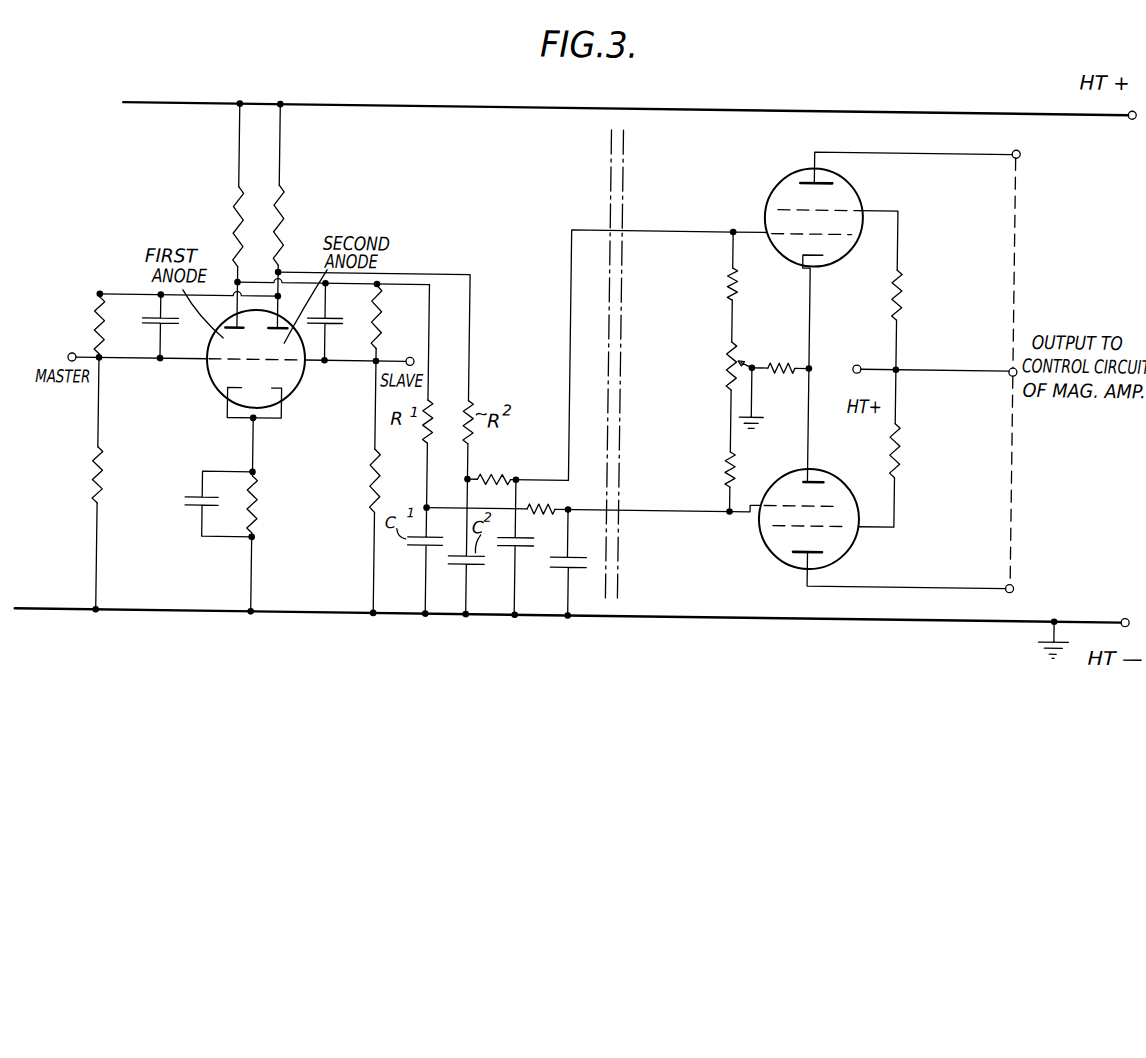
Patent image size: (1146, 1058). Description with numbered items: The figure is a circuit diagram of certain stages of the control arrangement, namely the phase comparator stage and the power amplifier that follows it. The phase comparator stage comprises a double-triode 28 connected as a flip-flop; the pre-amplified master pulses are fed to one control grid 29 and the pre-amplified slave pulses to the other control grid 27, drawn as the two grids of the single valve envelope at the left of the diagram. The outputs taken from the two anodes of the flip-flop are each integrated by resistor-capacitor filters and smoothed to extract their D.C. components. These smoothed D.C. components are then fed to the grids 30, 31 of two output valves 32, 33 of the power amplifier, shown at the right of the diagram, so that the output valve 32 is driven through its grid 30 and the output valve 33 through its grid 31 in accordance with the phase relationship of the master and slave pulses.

The control grid 27 is at (285, 366).
The double-triode 28 is at (252, 319).
The control grid 29 is at (227, 364).
The grid 30 is at (836, 232).
The grid 31 is at (825, 502).
The output valve 32 is at (871, 261).
The output valve 33 is at (883, 478).